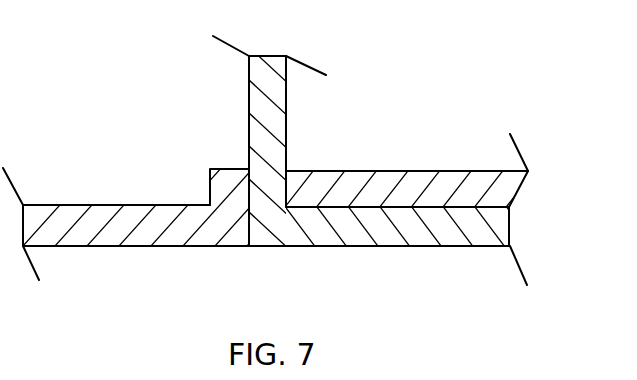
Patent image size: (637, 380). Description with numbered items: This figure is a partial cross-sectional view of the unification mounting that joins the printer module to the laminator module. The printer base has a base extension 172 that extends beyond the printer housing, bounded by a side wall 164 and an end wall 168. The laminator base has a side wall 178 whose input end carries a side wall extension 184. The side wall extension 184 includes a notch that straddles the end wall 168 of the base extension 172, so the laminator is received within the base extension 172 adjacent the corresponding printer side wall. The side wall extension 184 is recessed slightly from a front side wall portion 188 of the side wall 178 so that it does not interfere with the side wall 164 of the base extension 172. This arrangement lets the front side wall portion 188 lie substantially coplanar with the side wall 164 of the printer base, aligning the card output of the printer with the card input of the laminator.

The side wall 164 is at (460, 247).
The end wall 168 is at (286, 112).
The base extension 172 is at (353, 247).
The side wall 178 is at (118, 205).
The side wall extension 184 is at (453, 171).
The front side wall portion 188 is at (145, 246).